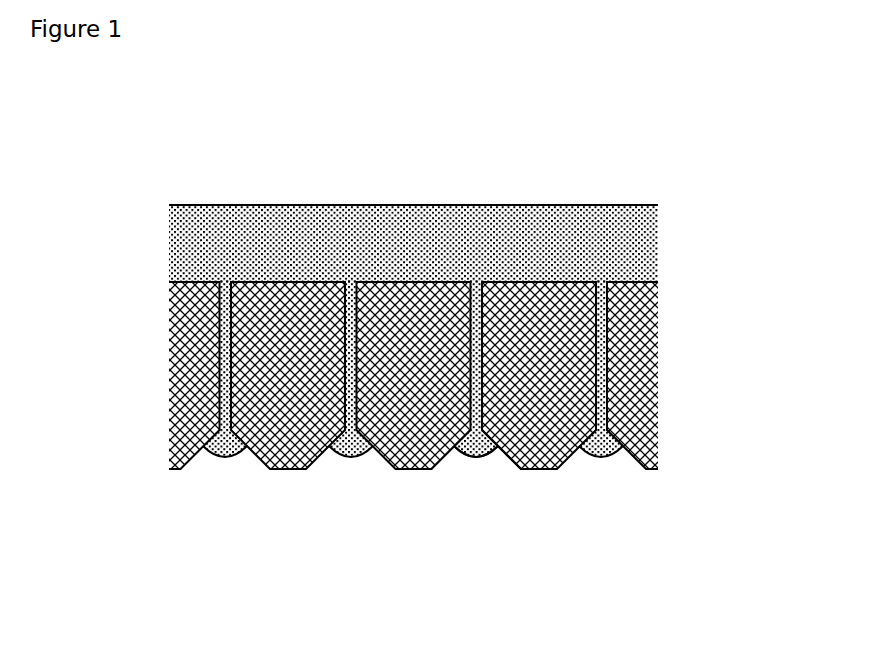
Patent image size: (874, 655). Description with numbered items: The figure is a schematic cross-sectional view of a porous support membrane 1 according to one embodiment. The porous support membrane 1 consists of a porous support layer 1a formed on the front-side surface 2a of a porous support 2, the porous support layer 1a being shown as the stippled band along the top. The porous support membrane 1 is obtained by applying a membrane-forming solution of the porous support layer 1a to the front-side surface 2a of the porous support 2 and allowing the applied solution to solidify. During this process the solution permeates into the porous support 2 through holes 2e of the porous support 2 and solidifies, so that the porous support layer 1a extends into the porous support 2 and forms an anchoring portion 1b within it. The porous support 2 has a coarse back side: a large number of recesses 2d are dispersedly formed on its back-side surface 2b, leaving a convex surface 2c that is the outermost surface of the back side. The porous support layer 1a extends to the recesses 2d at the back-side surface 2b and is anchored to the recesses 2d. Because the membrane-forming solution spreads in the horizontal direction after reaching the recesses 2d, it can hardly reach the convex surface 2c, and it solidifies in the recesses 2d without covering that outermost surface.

The porous support membrane 1 is at (318, 183).
The porous support layer 1a is at (213, 249).
The anchoring portion 1b is at (227, 457).
The porous support 2 is at (283, 410).
The front-side surface 2a is at (545, 282).
The back-side surface 2b is at (543, 472).
The convex surface 2c is at (408, 472).
The recess 2d is at (458, 455).
The hole 2e is at (610, 365).